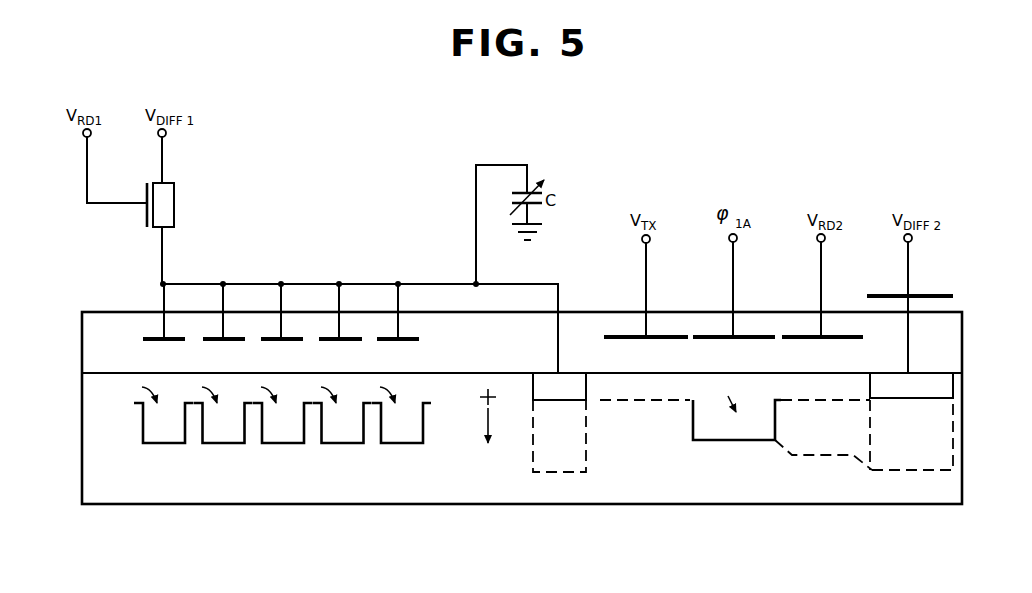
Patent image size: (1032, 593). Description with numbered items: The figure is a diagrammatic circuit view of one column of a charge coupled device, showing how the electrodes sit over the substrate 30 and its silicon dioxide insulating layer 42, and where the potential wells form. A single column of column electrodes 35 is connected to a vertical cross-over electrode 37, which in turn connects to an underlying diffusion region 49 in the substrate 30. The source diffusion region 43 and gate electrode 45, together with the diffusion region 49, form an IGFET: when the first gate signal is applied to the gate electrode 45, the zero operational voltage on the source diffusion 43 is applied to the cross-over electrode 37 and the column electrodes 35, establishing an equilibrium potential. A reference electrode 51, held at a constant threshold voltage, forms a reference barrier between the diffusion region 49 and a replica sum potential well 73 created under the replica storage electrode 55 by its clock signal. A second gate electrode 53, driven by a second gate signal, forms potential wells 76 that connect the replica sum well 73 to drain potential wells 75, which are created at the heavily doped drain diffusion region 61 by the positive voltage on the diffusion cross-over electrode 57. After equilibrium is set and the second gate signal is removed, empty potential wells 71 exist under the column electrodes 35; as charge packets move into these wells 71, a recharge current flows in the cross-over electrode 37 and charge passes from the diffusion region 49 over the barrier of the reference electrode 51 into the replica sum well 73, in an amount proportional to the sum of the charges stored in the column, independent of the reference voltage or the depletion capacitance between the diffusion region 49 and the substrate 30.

The P-type substrate 30 is at (953, 433).
The column electrodes 35 is at (175, 341).
The vertical cross-over electrodes 37 is at (362, 283).
The silicon dioxide insulating layer 42 is at (953, 338).
The source diffusion region 43 is at (169, 180).
The gate electrode 45 is at (85, 170).
The diffusion region 49 is at (580, 392).
The reference electrode 51 is at (655, 340).
The second gate electrode 53 is at (830, 339).
The replica storage electrode 55 is at (745, 339).
The diffusion cross-over electrode 57 is at (910, 270).
The n+ drain diffusion region 61 is at (942, 382).
The potential wells 71 is at (431, 540).
The replica sum potential well 73 is at (738, 442).
The drain potential wells 75 is at (915, 470).
The potential wells 76 is at (825, 455).